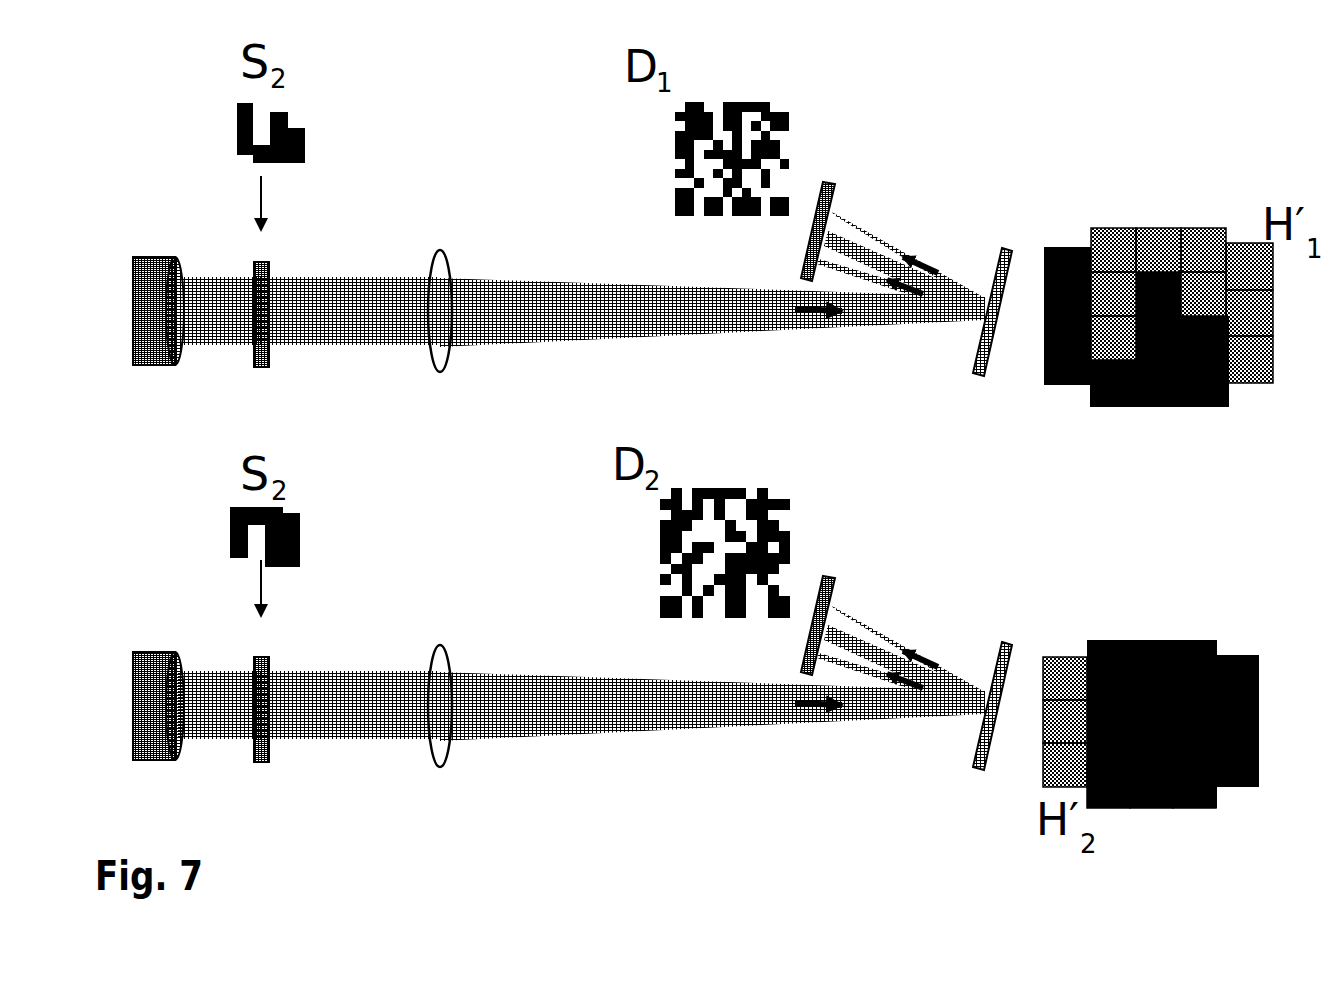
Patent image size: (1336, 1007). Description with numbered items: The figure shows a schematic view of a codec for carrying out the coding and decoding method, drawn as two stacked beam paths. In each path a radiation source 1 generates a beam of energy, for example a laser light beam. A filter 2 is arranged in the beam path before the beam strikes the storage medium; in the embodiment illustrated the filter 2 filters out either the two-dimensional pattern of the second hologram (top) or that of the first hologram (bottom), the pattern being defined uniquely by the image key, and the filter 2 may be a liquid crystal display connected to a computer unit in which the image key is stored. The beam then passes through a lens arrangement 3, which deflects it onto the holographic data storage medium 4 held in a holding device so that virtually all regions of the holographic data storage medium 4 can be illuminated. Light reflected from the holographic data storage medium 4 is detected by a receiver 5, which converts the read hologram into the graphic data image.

The radiation source 1 is at (130, 375).
The filter 2 is at (290, 375).
The lens arrangement 3 is at (442, 373).
The holographic data storage medium 4 is at (1006, 241).
The receiver 5 is at (840, 178).